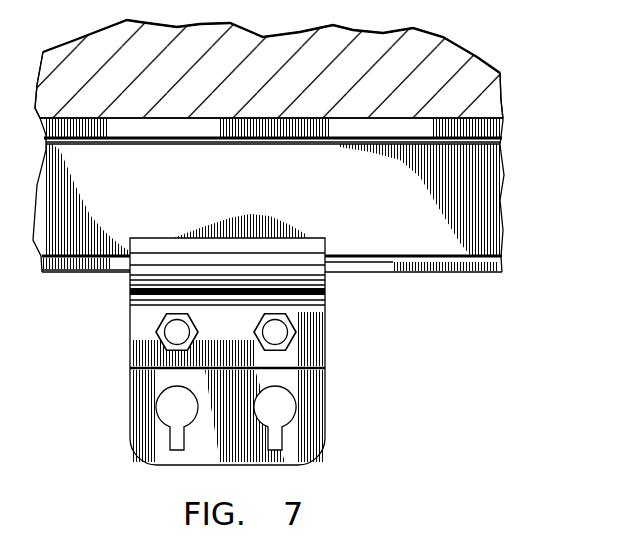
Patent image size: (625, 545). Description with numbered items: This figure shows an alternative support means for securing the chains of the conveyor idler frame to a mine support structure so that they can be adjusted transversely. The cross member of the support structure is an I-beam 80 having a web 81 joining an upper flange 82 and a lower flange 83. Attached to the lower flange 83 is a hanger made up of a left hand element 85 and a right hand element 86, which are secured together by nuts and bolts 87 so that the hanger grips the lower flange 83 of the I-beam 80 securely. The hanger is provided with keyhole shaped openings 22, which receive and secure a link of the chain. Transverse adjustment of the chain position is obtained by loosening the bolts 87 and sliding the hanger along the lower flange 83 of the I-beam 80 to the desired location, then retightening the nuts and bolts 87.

The I-beam 80 is at (380, 97).
The upper flange 82 is at (480, 121).
The web 81 is at (393, 210).
The lower flange 83 is at (393, 262).
The right hand element 86 is at (303, 360).
The left hand element 85 is at (298, 395).
The nuts and bolts 87 is at (176, 332).
The keyhole shaped openings 22 is at (168, 413).